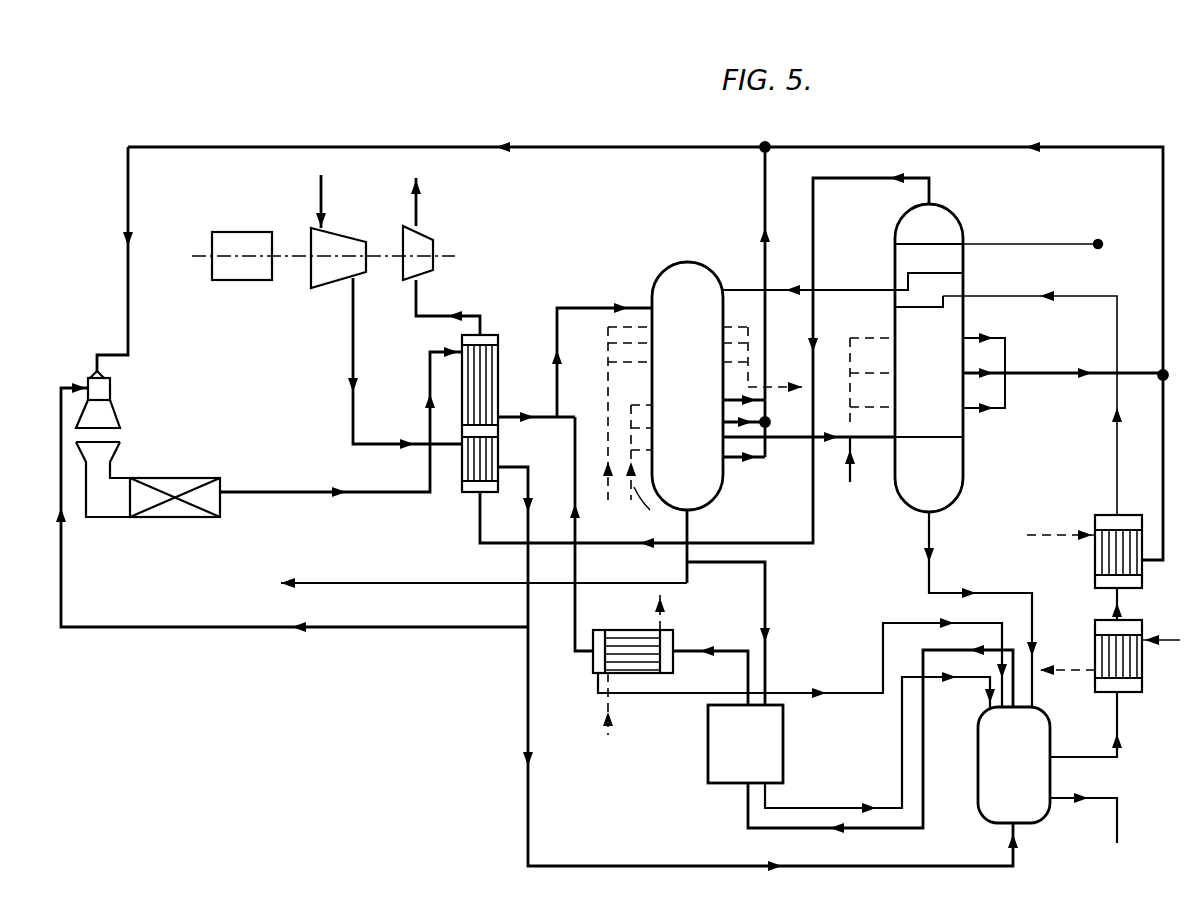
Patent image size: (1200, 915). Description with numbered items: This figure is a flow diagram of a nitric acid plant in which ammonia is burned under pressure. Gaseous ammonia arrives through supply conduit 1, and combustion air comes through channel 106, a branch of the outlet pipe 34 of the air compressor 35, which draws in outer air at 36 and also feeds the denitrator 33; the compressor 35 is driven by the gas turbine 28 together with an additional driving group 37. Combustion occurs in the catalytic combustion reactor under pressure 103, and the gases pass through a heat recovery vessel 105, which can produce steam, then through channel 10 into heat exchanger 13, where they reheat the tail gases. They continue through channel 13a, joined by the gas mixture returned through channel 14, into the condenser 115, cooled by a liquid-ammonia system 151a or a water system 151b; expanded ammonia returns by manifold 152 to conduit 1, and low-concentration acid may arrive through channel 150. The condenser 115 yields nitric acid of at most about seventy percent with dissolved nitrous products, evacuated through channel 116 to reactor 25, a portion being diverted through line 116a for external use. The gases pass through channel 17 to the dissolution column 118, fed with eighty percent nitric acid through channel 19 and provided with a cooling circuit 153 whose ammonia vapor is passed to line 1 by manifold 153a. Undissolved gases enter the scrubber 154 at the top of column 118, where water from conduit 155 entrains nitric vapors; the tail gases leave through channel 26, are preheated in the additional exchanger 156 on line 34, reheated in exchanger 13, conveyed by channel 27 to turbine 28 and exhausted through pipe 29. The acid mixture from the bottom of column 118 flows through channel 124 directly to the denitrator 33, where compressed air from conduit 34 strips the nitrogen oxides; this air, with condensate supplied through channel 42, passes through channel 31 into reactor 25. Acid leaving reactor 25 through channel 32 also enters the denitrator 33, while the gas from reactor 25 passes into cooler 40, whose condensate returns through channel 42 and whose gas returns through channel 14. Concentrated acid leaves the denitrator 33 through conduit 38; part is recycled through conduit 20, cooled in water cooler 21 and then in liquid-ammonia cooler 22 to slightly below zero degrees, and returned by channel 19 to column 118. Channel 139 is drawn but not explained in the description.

The ammonia supply conduit 1 is at (128, 281).
The channel 10 is at (273, 491).
The heat exchanger 13 is at (494, 413).
The channel 13a is at (512, 415).
The channel 14 is at (577, 481).
The channel 17 is at (803, 443).
The channel 19 is at (1086, 295).
The conduit 20 is at (1110, 758).
The water cooler 21 is at (1140, 667).
The liquid ammonia cooler 22 is at (1100, 557).
The reactor 25 is at (775, 751).
The channel 26 is at (850, 176).
The channel 27 is at (437, 316).
The gas turbine 28 is at (415, 278).
The exhaust pipe 29 is at (418, 213).
The channel 31 is at (925, 658).
The channel 32 is at (858, 808).
The denitrator 33 is at (988, 778).
The conduit 34 is at (351, 393).
The air compressor 35 is at (322, 279).
The outer air intake 36 is at (323, 201).
The additional driving group 37 is at (238, 232).
The conduit 38 is at (1062, 797).
The cooler 40 is at (612, 666).
The channel 42 is at (688, 693).
The catalytic combustion reactor under pressure 103 is at (117, 436).
The heat recovery vessel 105 is at (180, 481).
The channel 106 is at (283, 629).
The condenser 115 is at (712, 288).
The channel 116 is at (688, 553).
The line 116a is at (430, 586).
The dissolution column 118 is at (953, 336).
The channel 124 is at (994, 589).
The reactor feed line 139 is at (592, 304).
The channel 150 is at (872, 263).
The liquid ammonia cooling system 151a is at (607, 421).
The water cooling system 151b is at (605, 352).
The manifold 152 is at (768, 287).
The cooling circuit 153 is at (852, 427).
The manifold 153a is at (1006, 393).
The scrubber 154 is at (898, 248).
The conduit 155 is at (1043, 241).
The additional exchanger 156 is at (488, 466).